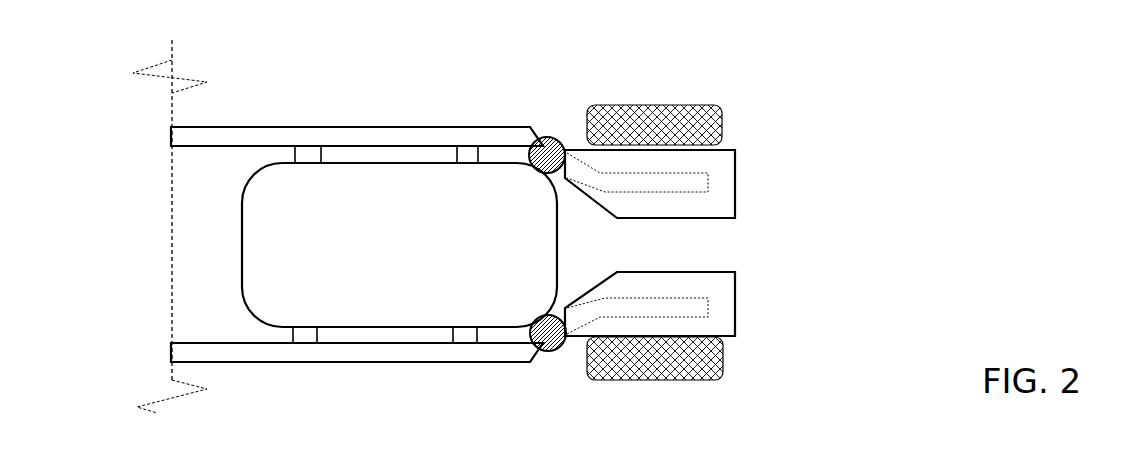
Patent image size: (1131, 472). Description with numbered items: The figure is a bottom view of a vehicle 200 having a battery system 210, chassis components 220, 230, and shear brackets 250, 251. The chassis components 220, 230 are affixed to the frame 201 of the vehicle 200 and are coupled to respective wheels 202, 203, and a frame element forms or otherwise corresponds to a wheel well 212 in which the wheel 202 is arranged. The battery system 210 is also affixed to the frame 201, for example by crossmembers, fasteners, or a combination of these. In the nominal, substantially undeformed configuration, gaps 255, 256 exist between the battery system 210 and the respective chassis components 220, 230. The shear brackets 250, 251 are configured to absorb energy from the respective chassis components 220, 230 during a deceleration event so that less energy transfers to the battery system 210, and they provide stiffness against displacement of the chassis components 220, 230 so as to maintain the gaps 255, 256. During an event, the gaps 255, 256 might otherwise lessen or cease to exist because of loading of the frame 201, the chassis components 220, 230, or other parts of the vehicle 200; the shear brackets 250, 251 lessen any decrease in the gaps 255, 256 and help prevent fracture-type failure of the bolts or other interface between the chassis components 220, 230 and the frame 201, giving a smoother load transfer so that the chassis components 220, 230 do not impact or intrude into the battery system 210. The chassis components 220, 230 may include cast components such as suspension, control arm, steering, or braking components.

The vehicle 200 is at (283, 82).
The frame 201 is at (458, 125).
The wheel 202 is at (668, 134).
The wheel 203 is at (670, 367).
The battery system 210 is at (407, 248).
The wheel well 212 is at (725, 143).
The chassis component 220 is at (735, 175).
The chassis component 230 is at (735, 293).
The shear bracket 250 is at (547, 137).
The shear bracket 251 is at (550, 353).
The gap 255 is at (559, 193).
The gap 256 is at (565, 300).